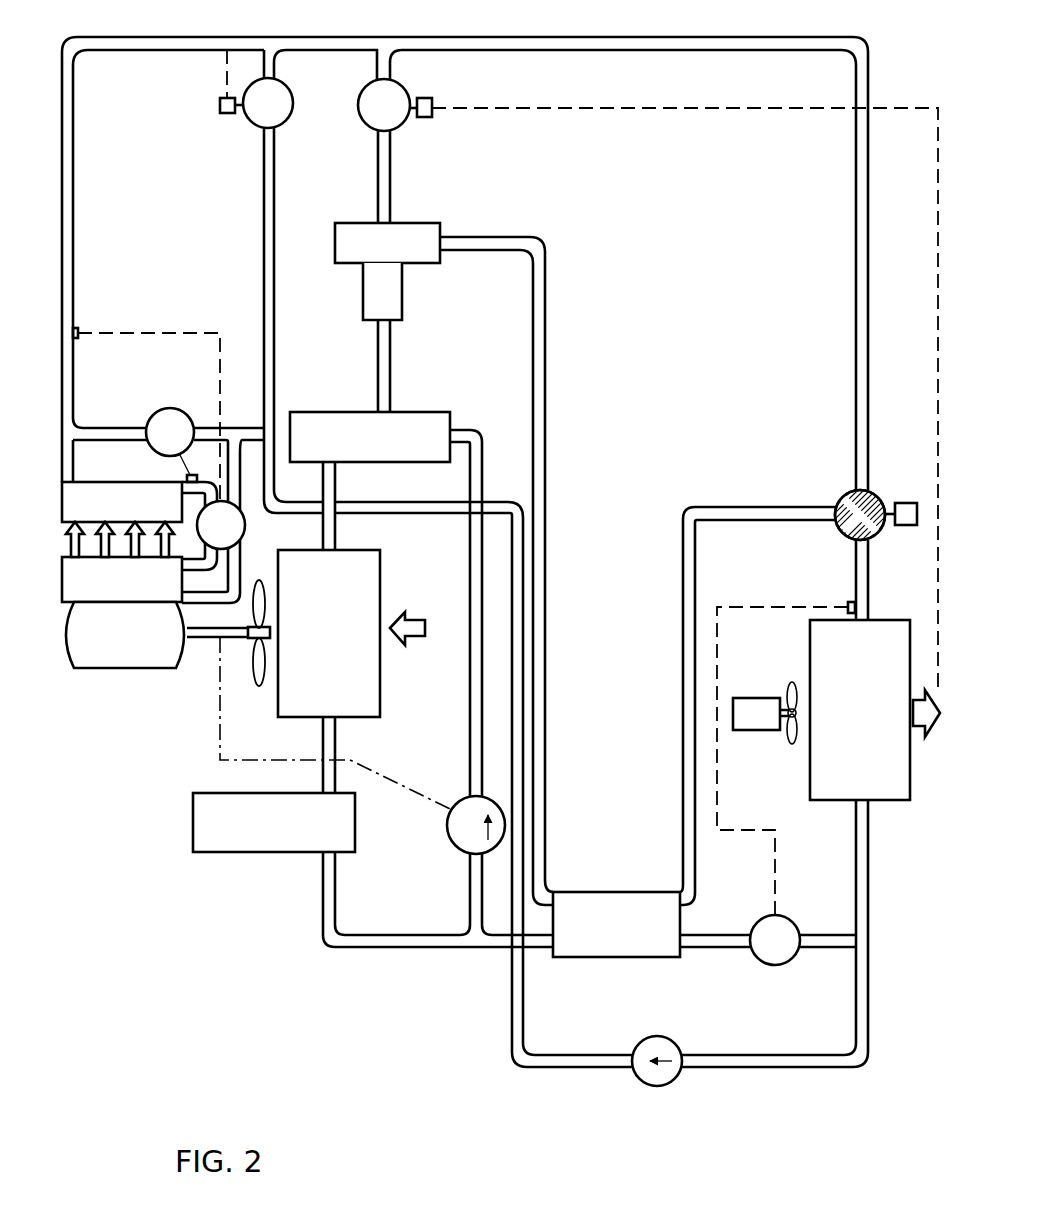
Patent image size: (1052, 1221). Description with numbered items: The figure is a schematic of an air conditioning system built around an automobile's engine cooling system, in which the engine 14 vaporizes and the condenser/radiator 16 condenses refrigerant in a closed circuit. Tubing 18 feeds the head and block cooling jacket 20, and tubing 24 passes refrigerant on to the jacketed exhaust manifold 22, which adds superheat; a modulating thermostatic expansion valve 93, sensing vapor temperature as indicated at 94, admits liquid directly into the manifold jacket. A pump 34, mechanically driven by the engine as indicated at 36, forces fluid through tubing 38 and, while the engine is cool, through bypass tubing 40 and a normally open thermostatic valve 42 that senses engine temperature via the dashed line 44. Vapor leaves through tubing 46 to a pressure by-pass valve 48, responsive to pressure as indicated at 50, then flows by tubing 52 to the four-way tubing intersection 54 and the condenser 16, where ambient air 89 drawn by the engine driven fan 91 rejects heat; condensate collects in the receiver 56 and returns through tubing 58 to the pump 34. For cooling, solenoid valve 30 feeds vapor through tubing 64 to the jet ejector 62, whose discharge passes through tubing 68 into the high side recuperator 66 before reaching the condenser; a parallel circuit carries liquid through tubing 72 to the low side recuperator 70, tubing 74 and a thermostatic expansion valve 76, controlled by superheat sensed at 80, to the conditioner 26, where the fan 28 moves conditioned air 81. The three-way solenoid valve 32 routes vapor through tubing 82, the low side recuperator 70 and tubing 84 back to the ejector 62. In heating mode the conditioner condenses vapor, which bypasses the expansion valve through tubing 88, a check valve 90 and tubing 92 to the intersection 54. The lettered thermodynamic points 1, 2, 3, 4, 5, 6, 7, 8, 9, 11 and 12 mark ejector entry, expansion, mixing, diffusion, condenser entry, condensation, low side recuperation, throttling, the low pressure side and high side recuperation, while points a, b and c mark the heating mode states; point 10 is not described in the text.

The thermodynamic point 1 is at (390, 36).
The thermodynamic point 2 is at (393, 227).
The thermodynamic point 3 is at (395, 295).
The thermodynamic point 4 is at (400, 406).
The thermodynamic point 5 is at (342, 533).
The thermodynamic point 6 is at (316, 789).
The thermodynamic point 7 is at (688, 953).
The thermodynamic point 8 is at (828, 960).
The thermodynamic point 9 is at (872, 616).
The low side recuperator inlet 10 is at (552, 886).
The thermodynamic point 11 is at (453, 424).
The thermodynamic point 12 is at (290, 420).
The engine 14 is at (86, 657).
The condenser/radiator 16 is at (381, 711).
The tubing 18 is at (234, 563).
The head and block cooling jacket 20 is at (62, 573).
The jacketed exhaust manifold 22 is at (62, 489).
The tubing 24 is at (190, 567).
The conditioner 26 is at (810, 795).
The fan 28 is at (745, 698).
The solenoid valve 30 is at (403, 86).
The three-way solenoid valve 32 is at (845, 495).
The pump 34 is at (447, 826).
The mechanical drive 36 is at (220, 736).
The tubing 38 is at (468, 586).
The bypass tubing 40 is at (88, 428).
The thermostatic valve 42 is at (165, 408).
The dashed line 44 is at (187, 476).
The tubing 46 is at (73, 195).
The pressure by-pass valve 48 is at (285, 88).
The pressure response indication 50 is at (223, 76).
The tubing 52 is at (264, 167).
The four-way tubing intersection 54 is at (365, 488).
The receiver 56 is at (193, 822).
The tubing 58 is at (325, 916).
The jet ejector 62 is at (335, 247).
The tubing 64 is at (378, 172).
The high side recuperator 66 is at (405, 463).
The tubing 68 is at (378, 340).
The low side recuperator 70 is at (560, 957).
The tubing 72 is at (500, 948).
The tubing 74 is at (707, 935).
The thermostatic expansion valve 76 is at (790, 920).
The superheat sensing indication 80 is at (775, 592).
The conditioned air 81 is at (925, 737).
The tubing 82 is at (683, 580).
The tubing 84 is at (546, 305).
The tubing 88 is at (737, 1068).
The ambient air 89 is at (425, 634).
The check valve 90 is at (640, 1040).
The engine driven fan 91 is at (253, 660).
The tubing 92 is at (512, 1040).
The modulating thermostatic expansion valve 93 is at (246, 525).
The vapor temperature sensing indication 94 is at (150, 333).
The thermodynamic point a is at (846, 546).
The thermodynamic point b is at (870, 1069).
The thermodynamic point c is at (341, 789).